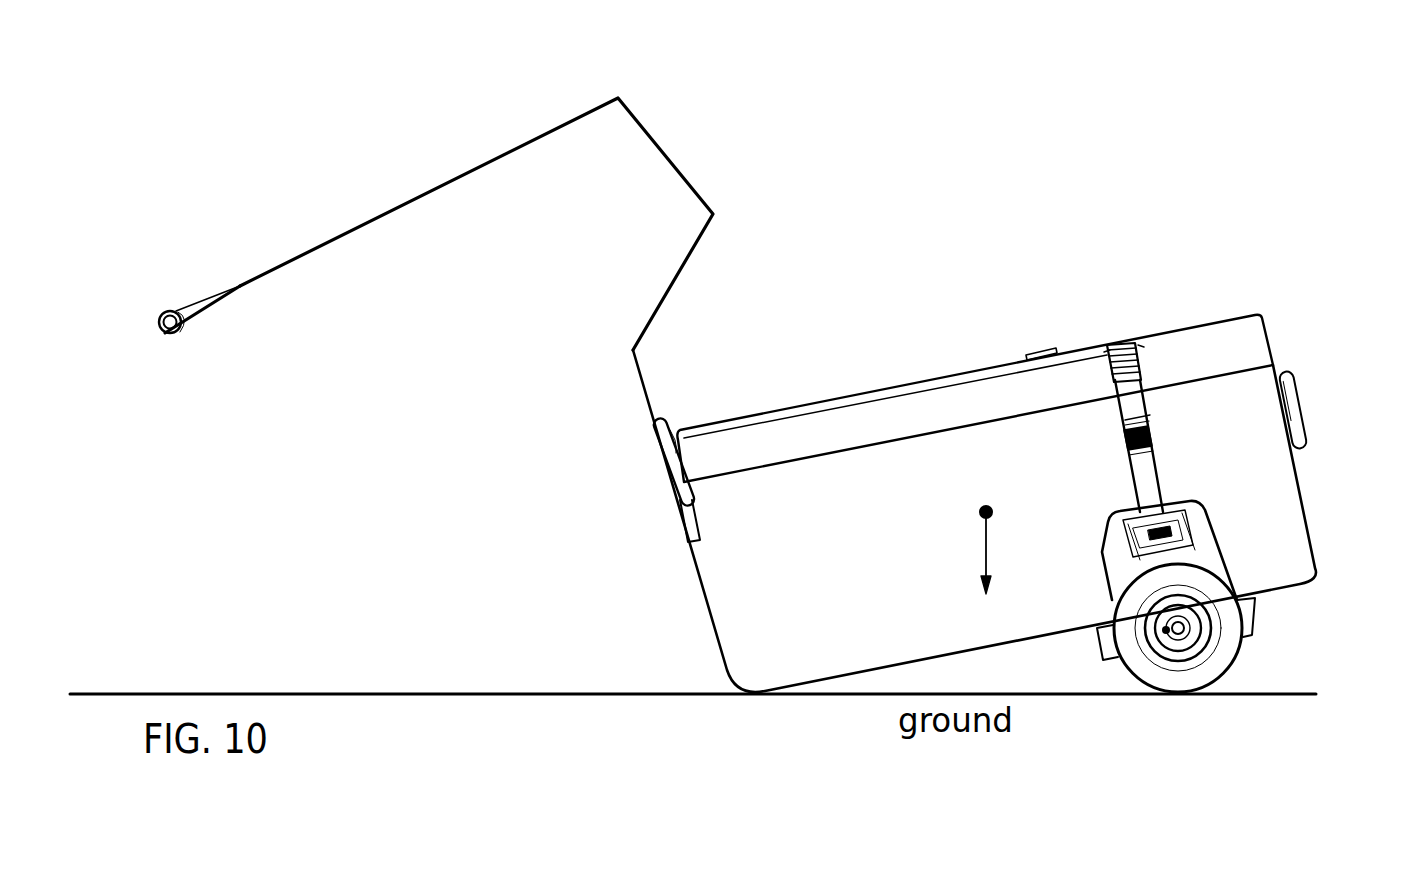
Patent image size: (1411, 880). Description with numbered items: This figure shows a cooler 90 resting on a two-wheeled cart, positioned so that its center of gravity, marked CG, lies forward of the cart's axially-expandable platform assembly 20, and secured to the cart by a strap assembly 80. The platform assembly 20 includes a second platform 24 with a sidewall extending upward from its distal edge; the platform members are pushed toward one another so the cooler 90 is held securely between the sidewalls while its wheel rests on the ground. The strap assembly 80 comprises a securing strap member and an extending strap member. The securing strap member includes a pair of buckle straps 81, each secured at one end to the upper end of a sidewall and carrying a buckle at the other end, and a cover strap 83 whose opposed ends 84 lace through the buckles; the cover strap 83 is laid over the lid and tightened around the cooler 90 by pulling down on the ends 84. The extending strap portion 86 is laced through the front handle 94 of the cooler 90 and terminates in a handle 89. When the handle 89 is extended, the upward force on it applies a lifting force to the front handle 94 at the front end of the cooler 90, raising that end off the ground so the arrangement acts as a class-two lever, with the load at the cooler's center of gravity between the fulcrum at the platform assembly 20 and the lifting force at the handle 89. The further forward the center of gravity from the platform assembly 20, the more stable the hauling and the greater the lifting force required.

The axially-expandable platform assembly 20 is at (1277, 607).
The second platform 24 is at (1212, 553).
The strap assembly 80 is at (733, 150).
The buckle straps 81 is at (1147, 475).
The cover strap 83 is at (1133, 345).
The ends of the cover strap 84 is at (1152, 430).
The extending strap portion 86 is at (452, 182).
The handle 89 is at (160, 335).
The cooler 90 is at (1240, 283).
The front handle 94 is at (667, 435).